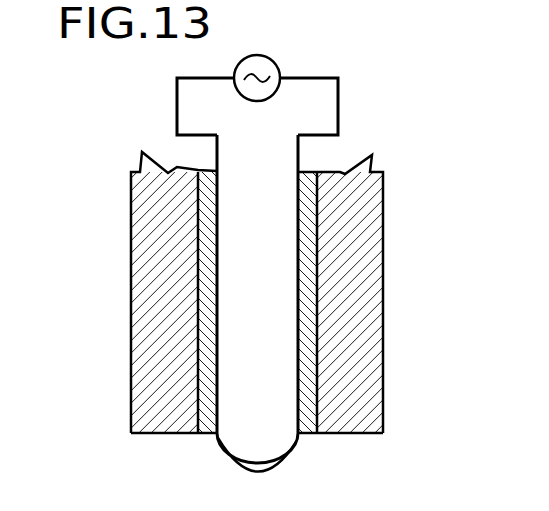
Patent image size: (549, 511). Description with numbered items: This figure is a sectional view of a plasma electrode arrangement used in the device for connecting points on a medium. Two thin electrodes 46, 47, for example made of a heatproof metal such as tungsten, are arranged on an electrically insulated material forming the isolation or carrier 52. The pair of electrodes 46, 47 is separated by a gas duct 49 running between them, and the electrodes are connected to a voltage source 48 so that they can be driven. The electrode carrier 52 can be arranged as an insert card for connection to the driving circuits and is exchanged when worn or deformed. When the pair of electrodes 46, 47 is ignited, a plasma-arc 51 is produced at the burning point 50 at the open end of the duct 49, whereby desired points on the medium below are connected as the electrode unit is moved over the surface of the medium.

The electrode 46 is at (207, 338).
The electrode 47 is at (307, 375).
The voltage source 48 is at (275, 60).
The duct 49 is at (270, 257).
The burning point 50 is at (207, 446).
The plasma-arc 51 is at (283, 460).
The isolation/carrier 52 is at (158, 213).